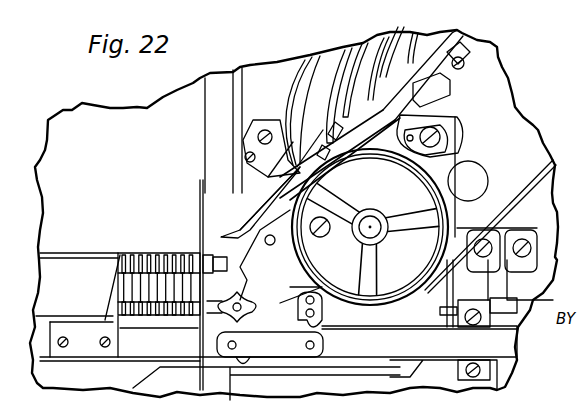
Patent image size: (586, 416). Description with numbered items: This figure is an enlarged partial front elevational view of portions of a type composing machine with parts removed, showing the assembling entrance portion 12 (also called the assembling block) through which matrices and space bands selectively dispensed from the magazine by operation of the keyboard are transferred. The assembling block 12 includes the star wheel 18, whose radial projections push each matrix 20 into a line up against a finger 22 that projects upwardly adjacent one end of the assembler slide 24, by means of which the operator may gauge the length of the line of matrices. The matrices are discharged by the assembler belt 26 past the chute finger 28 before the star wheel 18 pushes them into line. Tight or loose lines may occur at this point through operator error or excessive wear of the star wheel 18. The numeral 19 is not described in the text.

The assembling entrance portion 12 is at (376, 320).
The star wheel 18 is at (265, 328).
The frame plate 19 is at (57, 250).
The finger 22 is at (116, 292).
The assembler slide 24 is at (133, 348).
The assembler belt 26 is at (556, 210).
The chute finger 28 is at (252, 202).
The matrix 20 is at (330, 130).